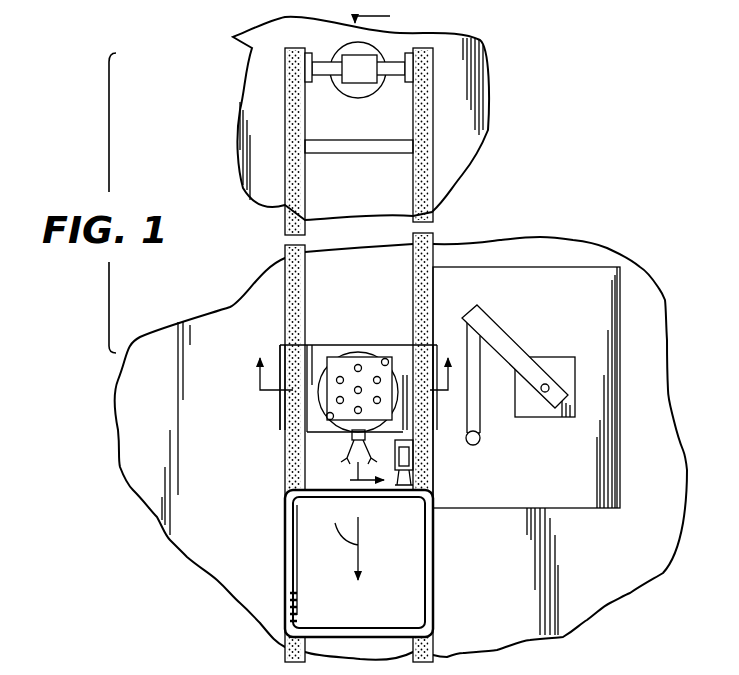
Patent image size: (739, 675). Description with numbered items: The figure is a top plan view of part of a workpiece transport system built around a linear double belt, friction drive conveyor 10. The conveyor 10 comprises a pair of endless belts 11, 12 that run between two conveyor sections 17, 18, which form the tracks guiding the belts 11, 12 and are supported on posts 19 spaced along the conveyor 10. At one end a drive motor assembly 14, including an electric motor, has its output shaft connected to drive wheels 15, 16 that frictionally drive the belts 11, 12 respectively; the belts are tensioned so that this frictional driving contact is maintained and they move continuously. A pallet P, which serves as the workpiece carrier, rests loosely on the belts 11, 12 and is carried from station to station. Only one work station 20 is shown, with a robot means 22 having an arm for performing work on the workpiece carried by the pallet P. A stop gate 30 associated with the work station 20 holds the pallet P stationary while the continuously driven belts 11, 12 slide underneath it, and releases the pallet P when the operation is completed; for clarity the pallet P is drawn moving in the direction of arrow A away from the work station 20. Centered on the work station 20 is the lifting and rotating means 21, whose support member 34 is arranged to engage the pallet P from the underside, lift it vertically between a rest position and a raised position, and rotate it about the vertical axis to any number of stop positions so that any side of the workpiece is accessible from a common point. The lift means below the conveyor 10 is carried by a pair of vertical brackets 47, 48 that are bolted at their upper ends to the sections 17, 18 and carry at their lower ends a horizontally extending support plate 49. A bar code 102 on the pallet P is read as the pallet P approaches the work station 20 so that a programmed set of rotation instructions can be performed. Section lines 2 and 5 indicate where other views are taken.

The linear double belt, friction drive conveyor 10 is at (472, 257).
The endless belt 11 is at (292, 192).
The endless belt 12 is at (422, 170).
The drive motor assembly 14 is at (301, 80).
The drive wheel 15 is at (305, 85).
The drive wheel 16 is at (405, 87).
The conveyor section 17 is at (285, 257).
The conveyor section 18 is at (440, 236).
The post 19 is at (357, 143).
The work station 20 is at (230, 404).
The means for lifting and rotating the pallet 21 is at (376, 332).
The robot means 22 is at (526, 451).
The stop gate 30 is at (408, 470).
The support member 34 is at (335, 358).
The vertical bracket 47 is at (280, 422).
The vertical bracket 48 is at (463, 412).
The support plate 49 is at (317, 423).
The bar code 102 is at (293, 607).
The section line 2- 2 is at (372, 246).
The section line 5- 5 is at (356, 356).
The arrow A is at (335, 546).
The pallet P is at (389, 563).